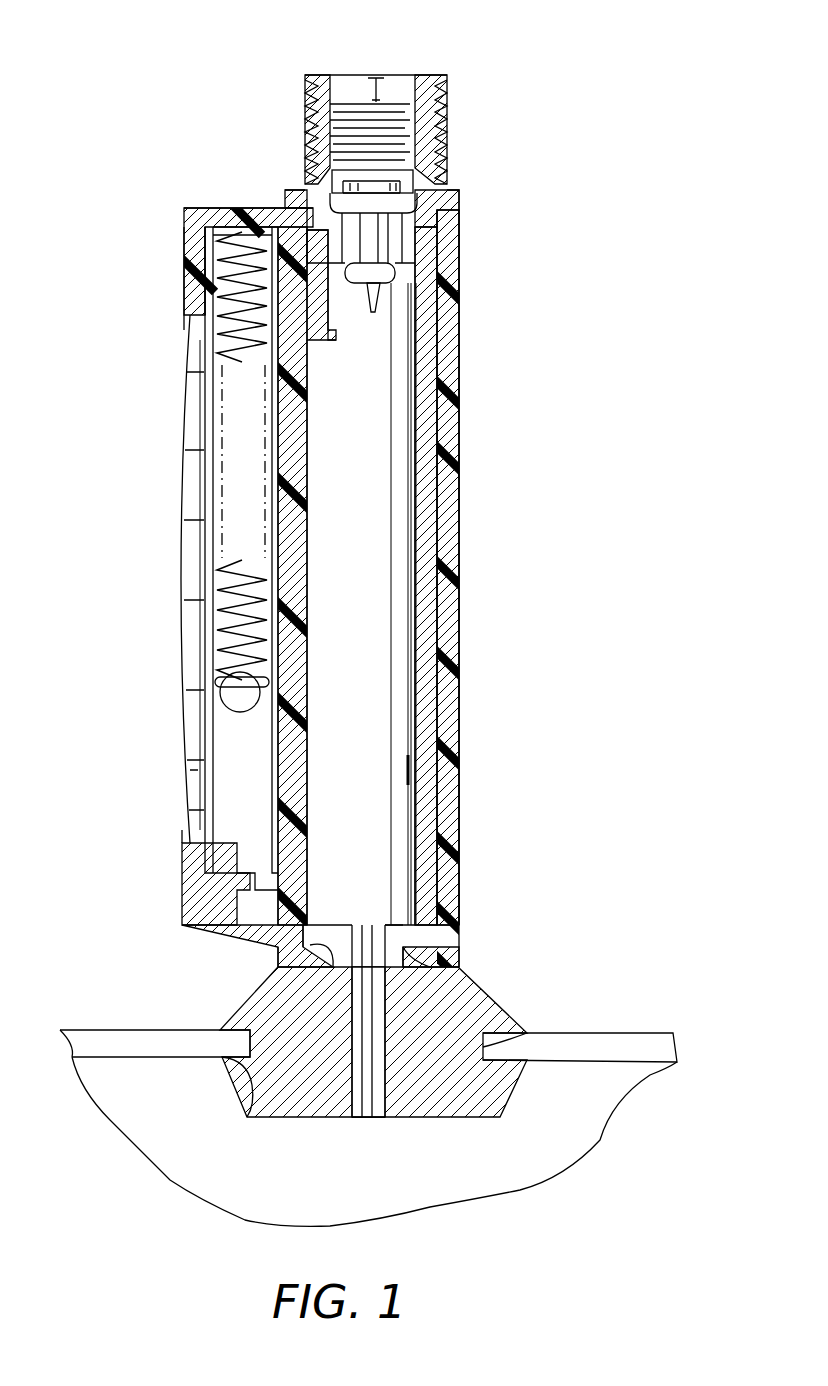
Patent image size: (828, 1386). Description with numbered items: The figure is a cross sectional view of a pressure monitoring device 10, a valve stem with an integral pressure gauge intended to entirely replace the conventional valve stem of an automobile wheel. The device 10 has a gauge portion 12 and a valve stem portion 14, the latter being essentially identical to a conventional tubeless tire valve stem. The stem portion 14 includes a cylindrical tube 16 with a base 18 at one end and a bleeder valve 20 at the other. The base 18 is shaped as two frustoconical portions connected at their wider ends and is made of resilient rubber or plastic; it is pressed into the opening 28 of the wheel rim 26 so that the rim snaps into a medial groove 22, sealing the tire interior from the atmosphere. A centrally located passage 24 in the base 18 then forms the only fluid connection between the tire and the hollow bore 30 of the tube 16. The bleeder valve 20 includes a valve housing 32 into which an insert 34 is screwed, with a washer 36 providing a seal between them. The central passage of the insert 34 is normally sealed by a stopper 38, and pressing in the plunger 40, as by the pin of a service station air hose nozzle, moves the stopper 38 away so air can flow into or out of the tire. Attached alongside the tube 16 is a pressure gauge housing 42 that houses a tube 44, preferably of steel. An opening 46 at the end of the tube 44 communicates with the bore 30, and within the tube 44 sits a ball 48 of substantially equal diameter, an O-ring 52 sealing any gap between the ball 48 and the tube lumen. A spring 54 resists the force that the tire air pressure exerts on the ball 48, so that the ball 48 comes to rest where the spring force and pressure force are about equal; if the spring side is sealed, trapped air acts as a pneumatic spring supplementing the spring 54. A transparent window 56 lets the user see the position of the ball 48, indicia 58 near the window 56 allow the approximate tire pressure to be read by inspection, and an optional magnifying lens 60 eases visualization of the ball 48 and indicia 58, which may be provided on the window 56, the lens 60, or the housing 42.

The pressure monitoring device 10 is at (530, 42).
The gauge portion 12 is at (210, 583).
The valve stem portion 14 is at (462, 250).
The cylindrical tube 16 is at (460, 385).
The base 18 is at (497, 992).
The bleeder valve 20 is at (391, 97).
The medial groove 22 is at (530, 1033).
The passage 24 is at (362, 990).
The wheel rim 26 is at (660, 1032).
The opening 28 is at (245, 1110).
The hollow bore 30 is at (432, 452).
The valve housing 32 is at (305, 100).
The insert 34 is at (438, 185).
The washer 36 is at (307, 190).
The stopper 38 is at (395, 270).
The plunger 40 is at (380, 72).
The pressure gauge housing 42 is at (215, 222).
The tube 44 is at (200, 262).
The opening 46 is at (235, 920).
The ball 48 is at (230, 704).
The O-ring 52 is at (218, 680).
The spring 54 is at (228, 592).
The transparent window 56 is at (208, 432).
The indicia 58 is at (190, 760).
The magnifying lens 60 is at (190, 480).